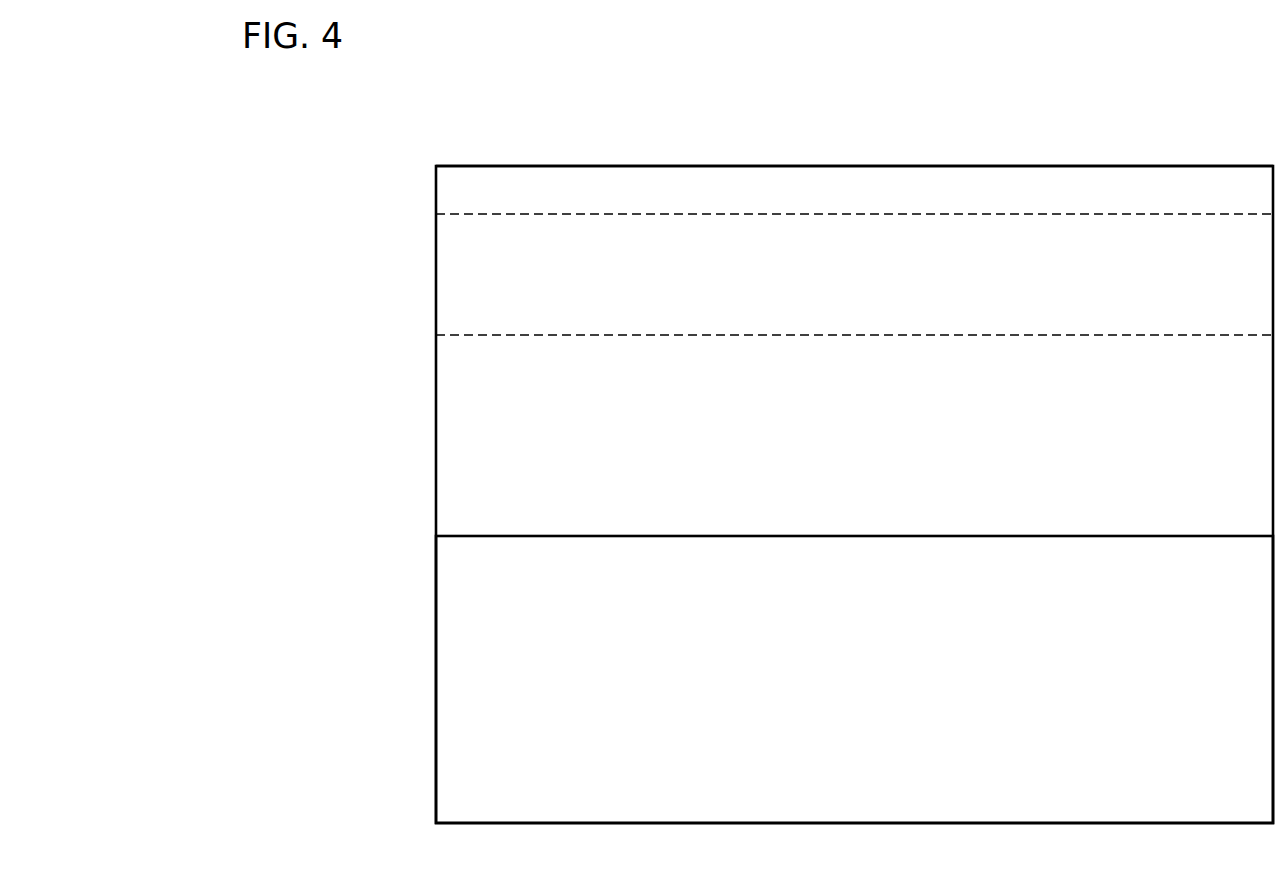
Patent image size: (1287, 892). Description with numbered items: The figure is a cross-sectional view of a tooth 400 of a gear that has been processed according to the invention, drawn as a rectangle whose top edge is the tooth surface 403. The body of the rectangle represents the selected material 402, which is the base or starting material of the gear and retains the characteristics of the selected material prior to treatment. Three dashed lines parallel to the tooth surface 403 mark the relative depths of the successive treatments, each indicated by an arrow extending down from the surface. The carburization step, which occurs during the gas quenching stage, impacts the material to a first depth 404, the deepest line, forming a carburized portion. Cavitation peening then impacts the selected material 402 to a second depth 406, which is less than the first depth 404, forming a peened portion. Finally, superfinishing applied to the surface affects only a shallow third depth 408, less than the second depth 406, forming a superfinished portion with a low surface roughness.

The tooth 400 is at (402, 246).
The selected material 402 is at (854, 679).
The tooth surface 403 is at (1205, 166).
The first depth 404 is at (893, 166).
The second depth 406 is at (799, 166).
The third depth 408 is at (712, 166).